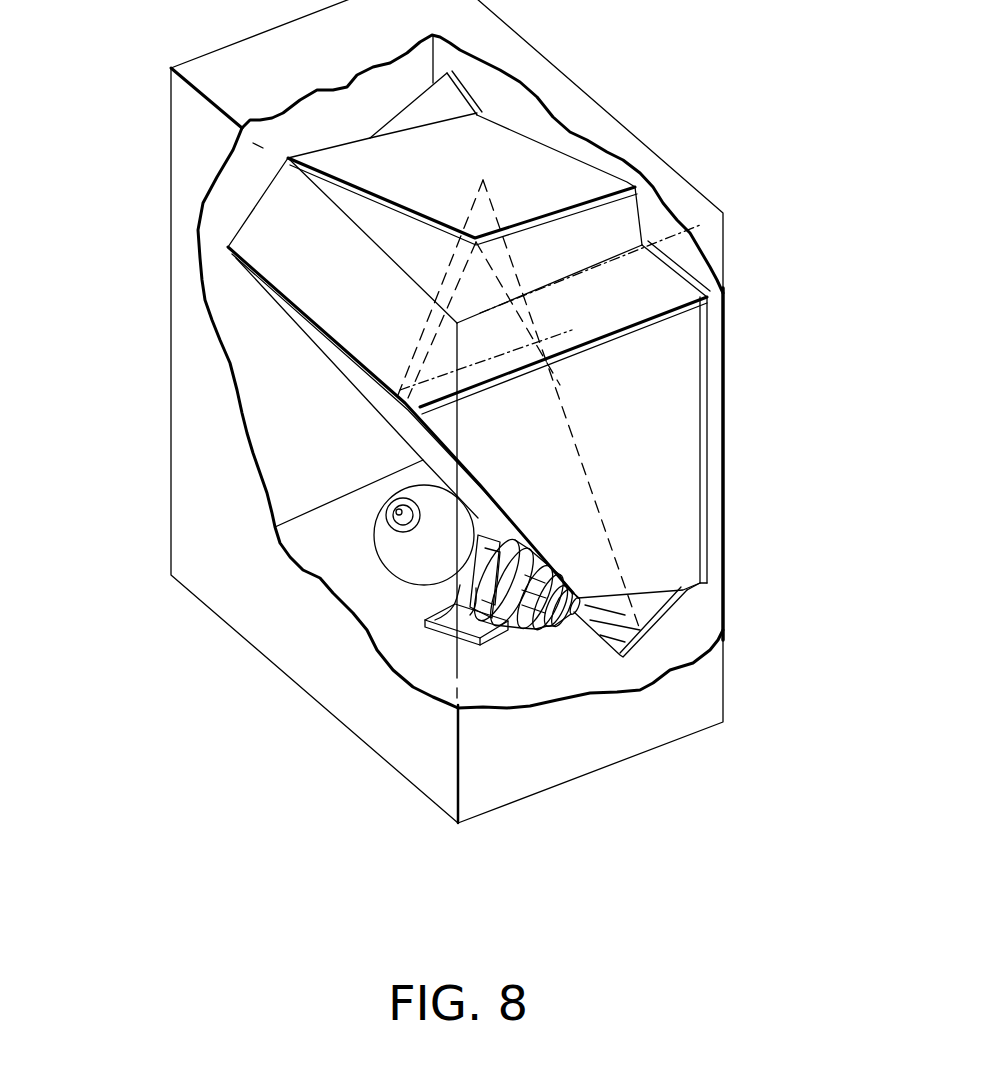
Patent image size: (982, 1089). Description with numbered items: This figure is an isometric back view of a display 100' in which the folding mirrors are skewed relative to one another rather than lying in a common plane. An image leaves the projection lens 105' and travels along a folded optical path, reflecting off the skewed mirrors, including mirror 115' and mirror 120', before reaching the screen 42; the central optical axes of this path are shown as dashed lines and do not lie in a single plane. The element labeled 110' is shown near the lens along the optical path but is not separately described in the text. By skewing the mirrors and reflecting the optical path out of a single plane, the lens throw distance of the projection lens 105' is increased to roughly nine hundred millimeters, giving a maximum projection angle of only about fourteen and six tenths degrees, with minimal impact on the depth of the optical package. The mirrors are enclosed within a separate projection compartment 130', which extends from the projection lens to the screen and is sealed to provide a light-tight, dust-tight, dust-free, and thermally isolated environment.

The screen 42 is at (708, 408).
The display 100' is at (396, 475).
The projection lens 105' is at (505, 662).
The lens 110' is at (647, 588).
The skewed mirror 115' is at (511, 382).
The skewed mirror 120' is at (385, 407).
The projection compartment 130' is at (627, 415).